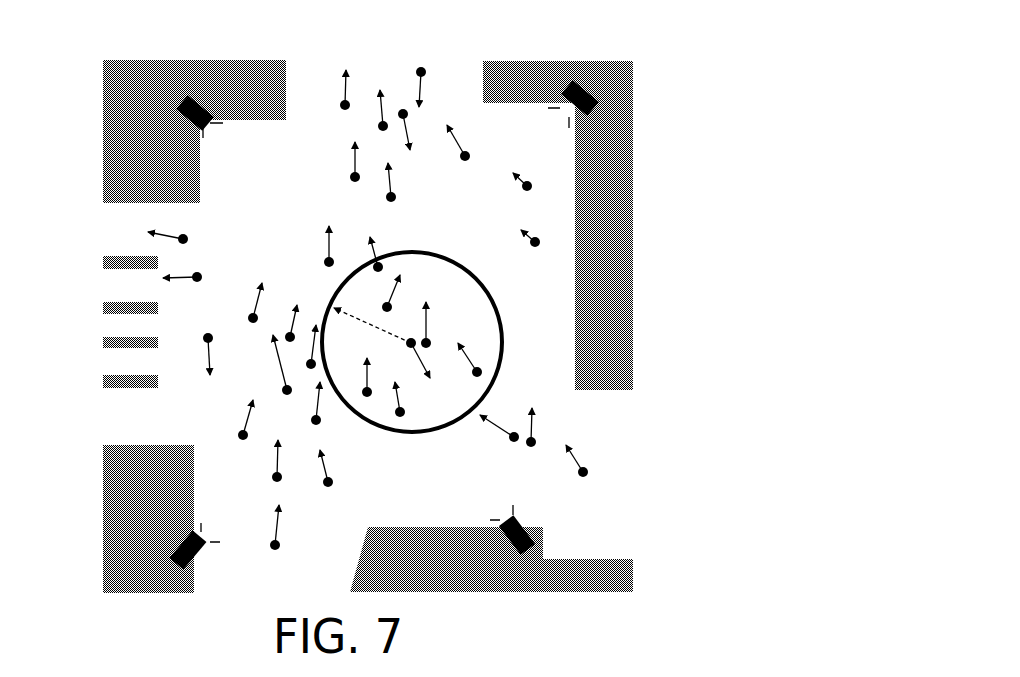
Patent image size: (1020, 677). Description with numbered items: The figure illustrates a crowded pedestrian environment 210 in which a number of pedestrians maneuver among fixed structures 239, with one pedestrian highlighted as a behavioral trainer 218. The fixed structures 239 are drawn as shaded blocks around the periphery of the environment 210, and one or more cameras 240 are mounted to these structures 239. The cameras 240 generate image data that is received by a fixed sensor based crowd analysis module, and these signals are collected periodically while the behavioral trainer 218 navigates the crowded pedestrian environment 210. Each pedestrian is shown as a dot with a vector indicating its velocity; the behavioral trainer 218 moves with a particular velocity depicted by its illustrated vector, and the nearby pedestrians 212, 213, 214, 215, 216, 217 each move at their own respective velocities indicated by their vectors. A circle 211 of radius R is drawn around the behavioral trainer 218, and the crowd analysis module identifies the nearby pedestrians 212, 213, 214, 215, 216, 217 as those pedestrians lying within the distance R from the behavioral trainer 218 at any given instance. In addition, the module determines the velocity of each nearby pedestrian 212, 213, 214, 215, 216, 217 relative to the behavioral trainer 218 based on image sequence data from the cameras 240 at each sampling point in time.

The crowded pedestrian environment 210 is at (657, 63).
The circular region of radius R 211 is at (493, 298).
The nearby pedestrian 212 is at (380, 258).
The nearby pedestrian 213 is at (392, 308).
The nearby pedestrian 214 is at (430, 342).
The nearby pedestrian 215 is at (482, 372).
The nearby pedestrian 216 is at (404, 412).
The nearby pedestrian 217 is at (370, 397).
The behavioral trainer 218 is at (409, 346).
The fixed structures 239 is at (106, 137).
The cameras 240 is at (197, 98).